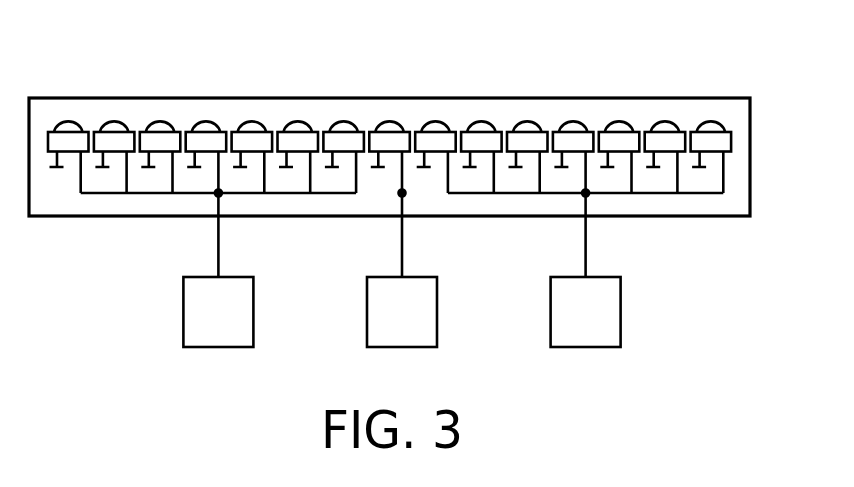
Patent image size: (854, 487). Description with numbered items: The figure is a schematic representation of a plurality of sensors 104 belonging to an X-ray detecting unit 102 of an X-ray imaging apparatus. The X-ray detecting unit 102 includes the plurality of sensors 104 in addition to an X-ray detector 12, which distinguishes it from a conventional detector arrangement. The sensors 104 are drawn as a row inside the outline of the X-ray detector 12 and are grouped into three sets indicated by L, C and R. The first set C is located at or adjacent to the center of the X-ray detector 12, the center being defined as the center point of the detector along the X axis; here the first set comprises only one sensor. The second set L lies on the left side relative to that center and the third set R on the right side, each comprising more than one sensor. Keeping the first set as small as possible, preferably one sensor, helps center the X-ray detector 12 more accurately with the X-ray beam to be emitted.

The X-ray detector 12 is at (661, 107).
The X-ray detecting unit 102 is at (577, 98).
The sensors 104 is at (481, 119).